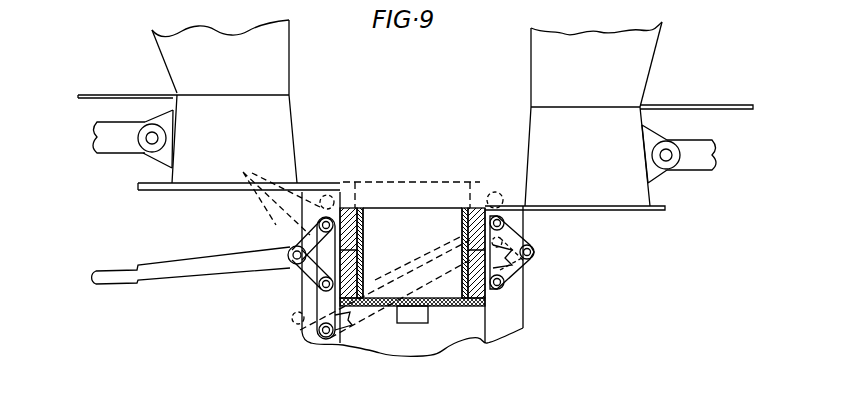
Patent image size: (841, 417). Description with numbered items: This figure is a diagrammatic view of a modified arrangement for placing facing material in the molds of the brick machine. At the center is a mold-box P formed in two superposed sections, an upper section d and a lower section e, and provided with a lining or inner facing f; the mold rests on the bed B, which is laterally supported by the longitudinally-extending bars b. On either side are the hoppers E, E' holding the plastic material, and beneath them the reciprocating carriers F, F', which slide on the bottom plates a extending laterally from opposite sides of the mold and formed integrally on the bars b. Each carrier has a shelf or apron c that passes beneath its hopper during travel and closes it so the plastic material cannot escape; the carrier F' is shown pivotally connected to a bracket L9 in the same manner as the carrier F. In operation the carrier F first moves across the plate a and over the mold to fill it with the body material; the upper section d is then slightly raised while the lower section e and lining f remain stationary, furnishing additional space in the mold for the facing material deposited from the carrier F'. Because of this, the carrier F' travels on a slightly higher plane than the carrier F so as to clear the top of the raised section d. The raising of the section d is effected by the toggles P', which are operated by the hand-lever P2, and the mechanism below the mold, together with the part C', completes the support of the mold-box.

The hopper E' is at (235, 57).
The reciprocating carrier F' is at (244, 139).
The hopper E is at (607, 64).
The reciprocating carrier F is at (574, 156).
The shelf or apron c is at (707, 104).
The pivoted bracket L9 is at (90, 142).
The bottom plate a is at (202, 189).
The mold-bed B is at (433, 342).
The longitudinally-extending bar b is at (515, 302).
The cylinder C' is at (412, 337).
The lower mold-box section e is at (363, 257).
The lining f is at (363, 227).
The upper mold-box section d is at (353, 210).
The mold-box P is at (363, 273).
The hand-lever P2 is at (218, 267).
The toggles P' is at (404, 255).